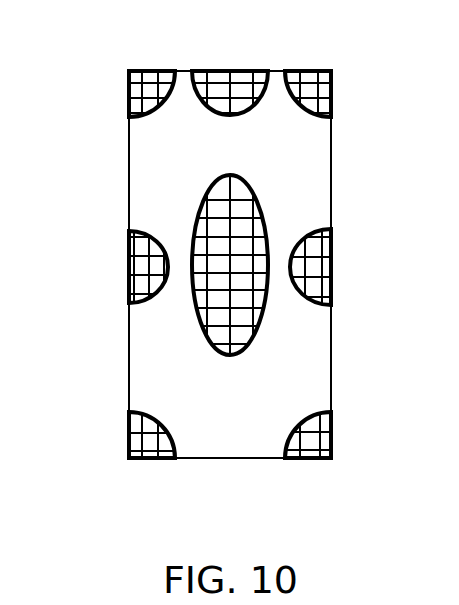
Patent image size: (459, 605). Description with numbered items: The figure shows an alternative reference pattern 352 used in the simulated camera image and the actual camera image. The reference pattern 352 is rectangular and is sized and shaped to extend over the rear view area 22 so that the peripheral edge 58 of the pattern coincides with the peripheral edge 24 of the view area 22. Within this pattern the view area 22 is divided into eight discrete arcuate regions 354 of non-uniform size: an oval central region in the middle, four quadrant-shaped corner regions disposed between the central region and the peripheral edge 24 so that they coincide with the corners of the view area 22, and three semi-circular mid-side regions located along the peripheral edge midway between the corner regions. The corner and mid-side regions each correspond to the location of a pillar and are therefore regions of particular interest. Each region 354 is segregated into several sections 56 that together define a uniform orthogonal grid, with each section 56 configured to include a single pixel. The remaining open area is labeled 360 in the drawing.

The rear view area 22 is at (315, 148).
The peripheral edge of the view area 24 is at (129, 376).
The peripheral edge of the reference pattern 58 is at (331, 366).
The sections 56 is at (222, 300).
The reference pattern 352 is at (216, 38).
The arcuate regions 354 is at (226, 241).
The non-conductive region 360 is at (230, 385).